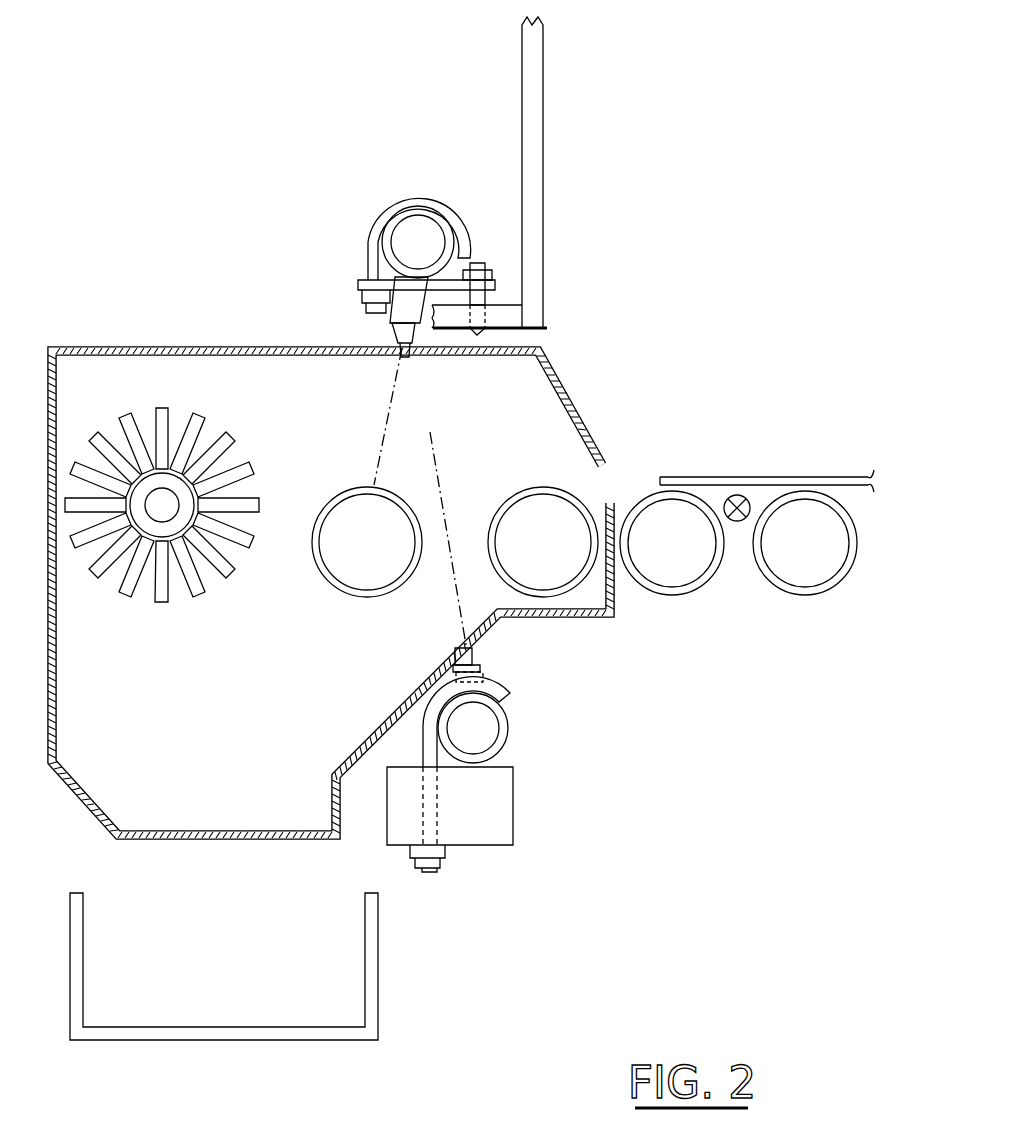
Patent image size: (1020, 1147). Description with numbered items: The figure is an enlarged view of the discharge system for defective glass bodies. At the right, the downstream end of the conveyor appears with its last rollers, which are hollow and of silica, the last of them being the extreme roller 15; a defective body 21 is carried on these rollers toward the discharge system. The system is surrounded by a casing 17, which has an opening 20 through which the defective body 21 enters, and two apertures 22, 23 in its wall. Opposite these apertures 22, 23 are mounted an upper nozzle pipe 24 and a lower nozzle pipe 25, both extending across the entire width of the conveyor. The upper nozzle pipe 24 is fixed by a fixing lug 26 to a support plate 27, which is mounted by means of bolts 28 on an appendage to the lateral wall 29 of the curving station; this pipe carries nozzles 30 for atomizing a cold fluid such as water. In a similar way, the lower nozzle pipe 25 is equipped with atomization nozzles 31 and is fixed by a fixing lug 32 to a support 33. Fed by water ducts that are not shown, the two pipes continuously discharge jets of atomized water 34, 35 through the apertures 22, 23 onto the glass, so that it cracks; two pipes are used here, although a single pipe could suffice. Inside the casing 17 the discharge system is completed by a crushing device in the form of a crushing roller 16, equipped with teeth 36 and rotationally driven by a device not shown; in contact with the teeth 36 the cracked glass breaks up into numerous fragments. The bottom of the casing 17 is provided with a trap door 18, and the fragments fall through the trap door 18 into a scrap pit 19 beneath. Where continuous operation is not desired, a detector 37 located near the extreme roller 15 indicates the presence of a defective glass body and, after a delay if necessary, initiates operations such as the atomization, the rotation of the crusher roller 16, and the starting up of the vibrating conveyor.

The extreme roller 15 is at (358, 570).
The crushing roller 16 is at (143, 615).
The casing 17 is at (165, 346).
The trap door 18 is at (197, 830).
The scrap pit 19 is at (347, 970).
The opening 20 is at (604, 483).
The defective body 21 is at (742, 480).
The aperture 22 is at (413, 362).
The aperture 23 is at (485, 635).
The upper nozzle pipe 24 is at (417, 223).
The lower nozzle pipe 25 is at (487, 725).
The fixing lug 26 is at (380, 230).
The support plate 27 is at (366, 283).
The bolts 28 is at (484, 262).
The lateral wall 29 is at (535, 175).
The nozzles 30 is at (397, 360).
The atomization nozzles 31 is at (472, 653).
The fixing lug 32 is at (430, 743).
The support 33 is at (497, 820).
The jet of atomized water 34 is at (372, 462).
The jet of atomized water 35 is at (440, 495).
The teeth 36 is at (220, 577).
The detector 37 is at (737, 523).